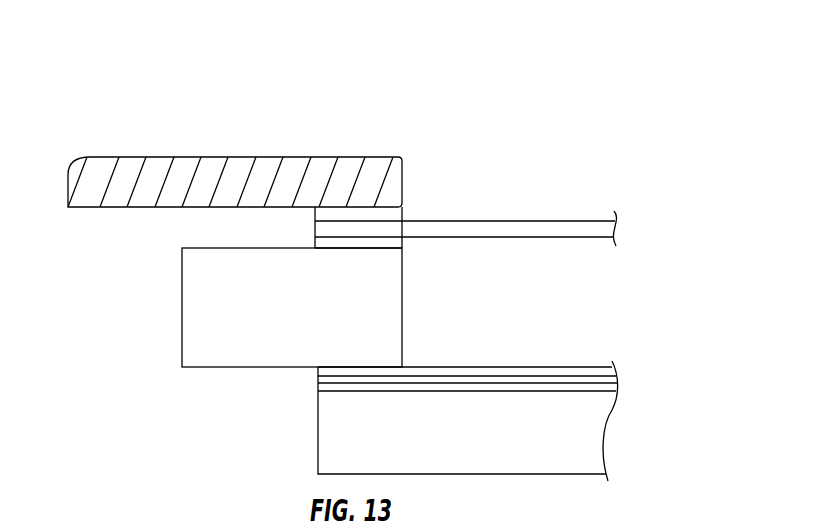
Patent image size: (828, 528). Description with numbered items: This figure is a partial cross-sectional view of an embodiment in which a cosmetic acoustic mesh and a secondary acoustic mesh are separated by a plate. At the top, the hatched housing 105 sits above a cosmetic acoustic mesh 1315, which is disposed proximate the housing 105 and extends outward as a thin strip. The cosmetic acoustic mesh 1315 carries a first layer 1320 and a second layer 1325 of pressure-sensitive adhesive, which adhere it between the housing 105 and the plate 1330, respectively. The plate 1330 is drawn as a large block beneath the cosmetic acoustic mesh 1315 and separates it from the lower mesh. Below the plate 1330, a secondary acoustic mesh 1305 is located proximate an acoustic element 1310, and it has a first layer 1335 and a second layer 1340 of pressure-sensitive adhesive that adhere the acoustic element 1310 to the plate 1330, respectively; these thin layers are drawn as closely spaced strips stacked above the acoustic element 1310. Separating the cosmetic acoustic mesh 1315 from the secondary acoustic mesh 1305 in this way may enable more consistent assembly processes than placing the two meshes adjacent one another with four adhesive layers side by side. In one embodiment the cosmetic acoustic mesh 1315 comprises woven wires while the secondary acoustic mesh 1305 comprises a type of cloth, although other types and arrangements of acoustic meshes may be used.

The housing 105 is at (232, 170).
The secondary acoustic mesh 1305 is at (515, 377).
The acoustic element 1310 is at (590, 428).
The cosmetic acoustic mesh 1315 is at (543, 228).
The first layer 1320 is at (427, 198).
The second layer 1325 is at (401, 243).
The plate 1330 is at (190, 308).
The first layer 1335 is at (457, 372).
The second layer 1340 is at (548, 388).